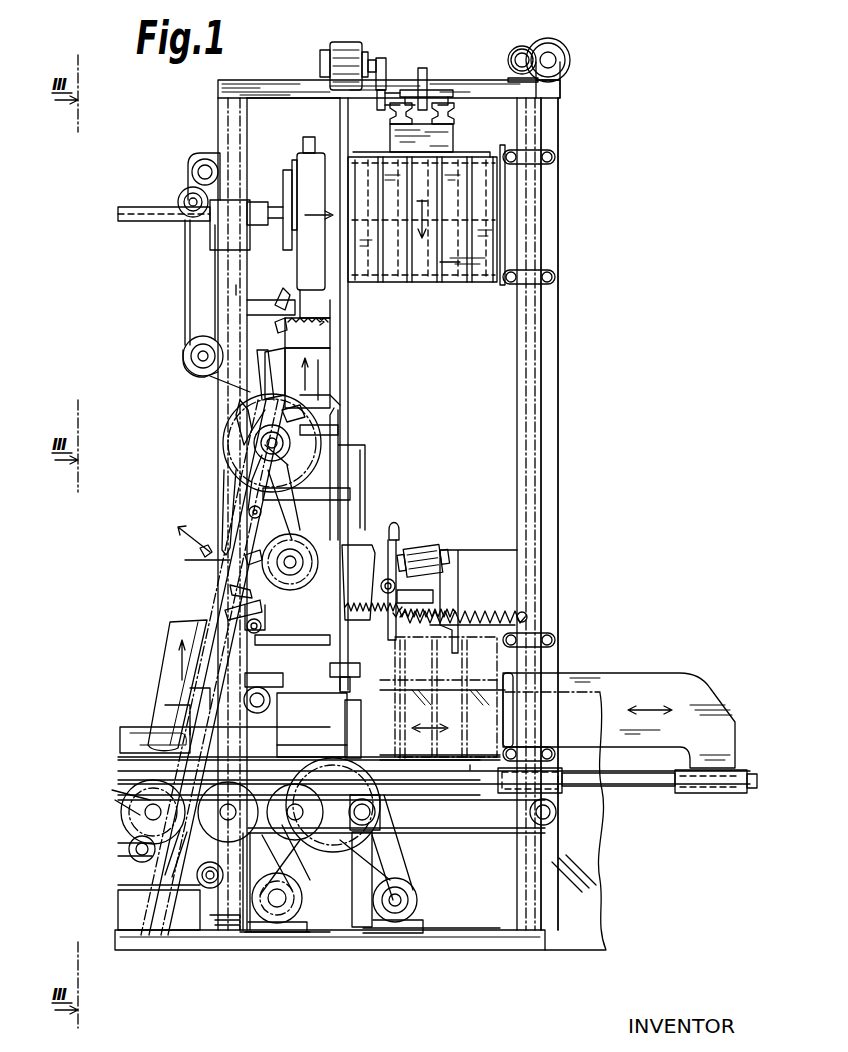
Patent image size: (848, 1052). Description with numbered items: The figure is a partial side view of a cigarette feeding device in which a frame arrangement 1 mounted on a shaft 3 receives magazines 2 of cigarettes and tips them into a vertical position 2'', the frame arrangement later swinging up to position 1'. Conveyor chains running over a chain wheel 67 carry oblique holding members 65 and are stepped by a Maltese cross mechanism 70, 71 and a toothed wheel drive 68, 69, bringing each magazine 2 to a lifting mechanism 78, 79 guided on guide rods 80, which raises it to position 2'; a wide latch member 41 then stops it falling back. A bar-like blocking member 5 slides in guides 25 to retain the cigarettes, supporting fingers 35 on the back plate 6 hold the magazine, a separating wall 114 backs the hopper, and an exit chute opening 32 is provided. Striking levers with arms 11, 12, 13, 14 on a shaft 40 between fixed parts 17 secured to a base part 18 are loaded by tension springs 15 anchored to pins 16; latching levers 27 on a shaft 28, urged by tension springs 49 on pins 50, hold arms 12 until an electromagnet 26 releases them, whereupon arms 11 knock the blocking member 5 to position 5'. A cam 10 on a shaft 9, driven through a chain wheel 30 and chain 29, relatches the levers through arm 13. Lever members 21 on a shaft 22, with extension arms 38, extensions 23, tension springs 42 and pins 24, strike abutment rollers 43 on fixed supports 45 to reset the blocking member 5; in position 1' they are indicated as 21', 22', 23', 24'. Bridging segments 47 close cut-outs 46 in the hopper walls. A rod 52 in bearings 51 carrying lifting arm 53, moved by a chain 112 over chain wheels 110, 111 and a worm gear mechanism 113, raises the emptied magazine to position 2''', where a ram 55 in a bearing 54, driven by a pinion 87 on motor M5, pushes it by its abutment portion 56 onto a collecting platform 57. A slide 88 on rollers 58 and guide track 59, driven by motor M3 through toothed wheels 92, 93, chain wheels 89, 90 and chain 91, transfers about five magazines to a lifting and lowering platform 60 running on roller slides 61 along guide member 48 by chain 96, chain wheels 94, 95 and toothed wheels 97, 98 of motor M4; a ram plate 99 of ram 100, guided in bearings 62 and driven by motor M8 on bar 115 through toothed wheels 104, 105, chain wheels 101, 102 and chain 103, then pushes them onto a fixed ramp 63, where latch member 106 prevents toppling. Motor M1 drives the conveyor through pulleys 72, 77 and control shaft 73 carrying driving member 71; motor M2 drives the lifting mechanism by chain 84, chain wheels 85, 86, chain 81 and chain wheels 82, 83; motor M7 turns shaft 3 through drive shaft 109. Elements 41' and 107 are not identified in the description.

The frame arrangement 1 is at (203, 667).
The vertical position of frame arrangement 1' is at (211, 650).
The magazine 2 is at (173, 685).
The lifted magazine position 2' is at (181, 548).
The vertical magazine position 2'' is at (332, 362).
The raised magazine position 2''' is at (312, 221).
The shaft 3 is at (260, 440).
The blocking member 5 is at (227, 443).
The struck position of blocking member 5' is at (327, 400).
The back plate 6 is at (322, 372).
The shaft 9 is at (303, 572).
The cam 10 is at (320, 505).
The striking lever arms 11 is at (340, 445).
The striking lever arms 12 is at (397, 555).
The striking lever arm 13 is at (318, 545).
The striking lever arms 14 is at (355, 612).
The tension springs 15 is at (482, 612).
The pins 16 is at (527, 617).
The fixed parts 17 is at (228, 108).
The base part 18 is at (600, 882).
The lever members 21 is at (210, 483).
The lever members in vertical position 21' is at (190, 361).
The shaft 22 is at (181, 512).
The shaft in vertical position 22' is at (267, 365).
The extensions 23 is at (219, 571).
The extensions in vertical position 23' is at (268, 321).
The pins 24 is at (180, 535).
The pins in vertical position 24' is at (354, 309).
The guides 25 is at (258, 470).
The electromagnet 26 is at (428, 548).
The latching levers 27 is at (399, 528).
The shaft 28 is at (383, 584).
The chain 29 is at (352, 470).
The chain wheel 30 is at (325, 418).
The exit chute opening 32 is at (260, 626).
The supporting fingers 35 is at (318, 314).
The extension arms 38 is at (185, 561).
The shaft 40 is at (360, 582).
The latch member 41 is at (185, 598).
The block 41' is at (271, 282).
The tension springs 42 is at (305, 316).
The abutment rollers 43 is at (250, 512).
The fixed supports 45 is at (335, 490).
The cut-out 46 is at (312, 394).
The bridging segments 47 is at (240, 425).
The vertical guide member 48 is at (540, 495).
The tension springs 49 is at (428, 638).
The pins 50 is at (398, 636).
The bearings 51 is at (230, 612).
The rod 52 is at (236, 290).
The lifting arm 53 is at (309, 137).
The bearing 54 is at (262, 204).
The ram 55 is at (140, 222).
The abutment portion 56 is at (287, 175).
The collecting platform 57 is at (493, 272).
The rollers 58 is at (392, 122).
The horizontal guide track 59 is at (422, 217).
The lifting and lowering platform 60 is at (450, 265).
The roller slides 61 is at (512, 152).
The bearings 62 is at (515, 795).
The fixed ramp 63 is at (482, 771).
The holding members 65 is at (152, 718).
The chain wheel 67 is at (212, 890).
The toothed wheel drive 68 is at (232, 905).
The toothed wheel drive 69 is at (300, 845).
The Maltese cross mechanism 70 is at (320, 850).
The driving member 71 is at (350, 880).
The pulley 72 is at (400, 852).
The shaft 73 is at (378, 805).
The pulley 77 is at (404, 901).
The lifting mechanism 78 is at (160, 905).
The lifting mechanism 79 is at (153, 748).
The guide rods 80 is at (185, 900).
The chain 81 is at (320, 726).
The chain wheel 82 is at (246, 679).
The chain wheel 83 is at (208, 893).
The chain 84 is at (300, 850).
The chain wheel 85 is at (285, 932).
The chain wheel 86 is at (193, 697).
The pinion 87 is at (186, 192).
The slide 88 is at (458, 170).
The chain wheel 89 is at (428, 92).
The chain wheel 90 is at (461, 55).
The chain 91 is at (421, 68).
The toothed wheel 92 is at (380, 58).
The toothed wheel 93 is at (377, 103).
The chain wheel 94 is at (557, 62).
The chain wheel 95 is at (556, 815).
The chain 96 is at (560, 236).
The toothed wheel 97 is at (528, 48).
The toothed wheel 98 is at (562, 44).
The ram plate 99 is at (668, 676).
The ram 100 is at (650, 788).
The chain wheel 101 is at (375, 848).
The chain wheel 102 is at (112, 792).
The chain 103 is at (378, 822).
The toothed wheel 104 is at (150, 868).
The toothed wheel 105 is at (110, 802).
The latch member 106 is at (351, 666).
The block 107 is at (246, 612).
The drive shaft 109 is at (361, 710).
The chain wheel 110 is at (192, 343).
The chain wheel 111 is at (192, 178).
The chain 112 is at (184, 264).
The worm gear mechanism 113 is at (197, 162).
The separating wall 114 is at (348, 352).
The bar 115 is at (140, 893).
The driving motor M1 is at (400, 922).
The motor M2 is at (270, 922).
The motor M3 is at (343, 56).
The motor M4 is at (518, 48).
The motor M5 is at (189, 200).
The motor M7 is at (345, 758).
The motor M8 is at (159, 904).